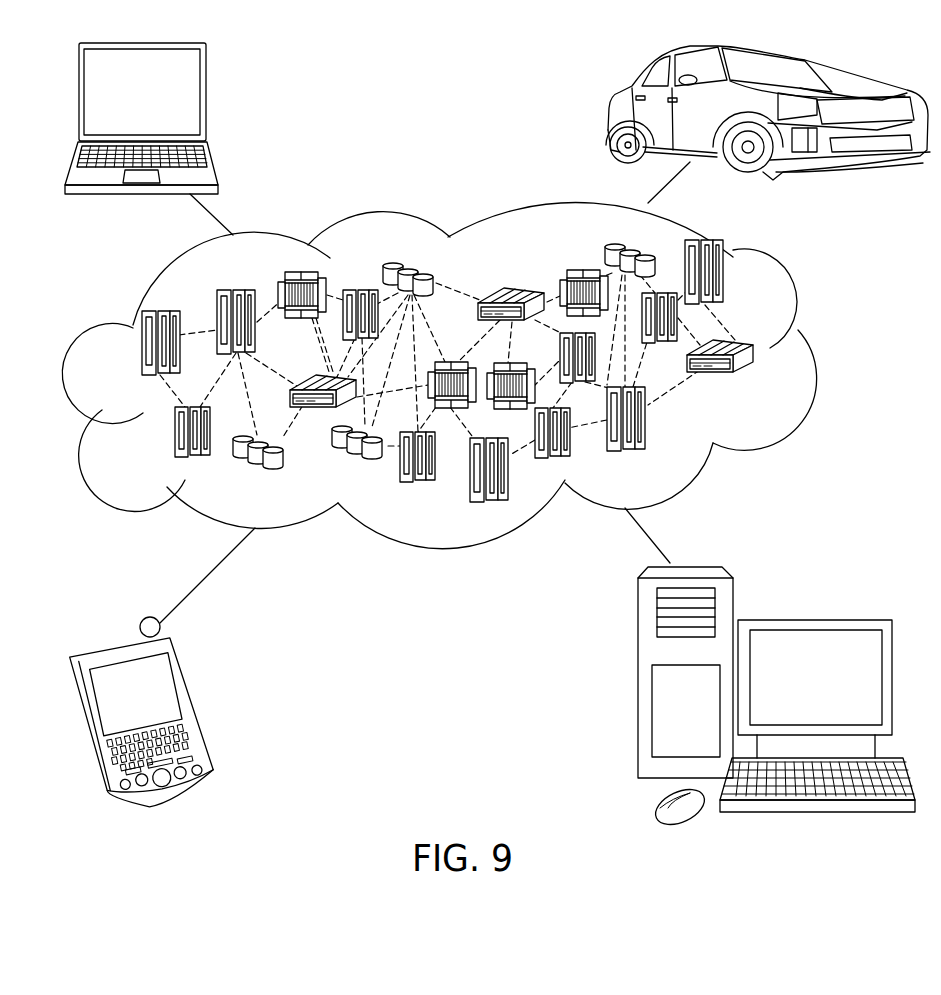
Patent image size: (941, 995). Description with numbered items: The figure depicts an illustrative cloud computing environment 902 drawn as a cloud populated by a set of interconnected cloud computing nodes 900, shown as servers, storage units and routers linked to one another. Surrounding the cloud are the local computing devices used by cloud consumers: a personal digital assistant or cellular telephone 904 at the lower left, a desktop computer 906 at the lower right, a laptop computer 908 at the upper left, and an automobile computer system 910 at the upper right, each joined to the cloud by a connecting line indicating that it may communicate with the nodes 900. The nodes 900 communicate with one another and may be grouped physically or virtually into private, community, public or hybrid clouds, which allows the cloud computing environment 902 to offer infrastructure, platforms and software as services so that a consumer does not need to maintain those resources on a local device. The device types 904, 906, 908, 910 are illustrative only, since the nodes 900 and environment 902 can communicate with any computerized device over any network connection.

The cloud computing nodes 900 is at (496, 437).
The cloud computing environment 902 is at (813, 357).
The personal digital assistant (PDA) or cellular telephone 904 is at (197, 707).
The desktop computer 906 is at (814, 620).
The laptop computer 908 is at (206, 100).
The automobile computer system 910 is at (611, 115).